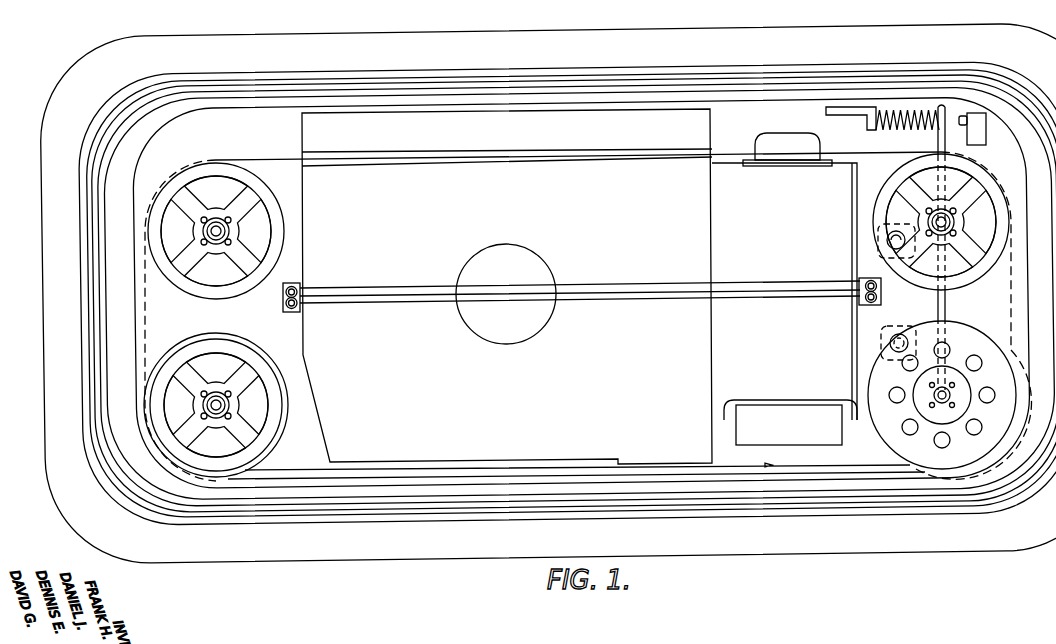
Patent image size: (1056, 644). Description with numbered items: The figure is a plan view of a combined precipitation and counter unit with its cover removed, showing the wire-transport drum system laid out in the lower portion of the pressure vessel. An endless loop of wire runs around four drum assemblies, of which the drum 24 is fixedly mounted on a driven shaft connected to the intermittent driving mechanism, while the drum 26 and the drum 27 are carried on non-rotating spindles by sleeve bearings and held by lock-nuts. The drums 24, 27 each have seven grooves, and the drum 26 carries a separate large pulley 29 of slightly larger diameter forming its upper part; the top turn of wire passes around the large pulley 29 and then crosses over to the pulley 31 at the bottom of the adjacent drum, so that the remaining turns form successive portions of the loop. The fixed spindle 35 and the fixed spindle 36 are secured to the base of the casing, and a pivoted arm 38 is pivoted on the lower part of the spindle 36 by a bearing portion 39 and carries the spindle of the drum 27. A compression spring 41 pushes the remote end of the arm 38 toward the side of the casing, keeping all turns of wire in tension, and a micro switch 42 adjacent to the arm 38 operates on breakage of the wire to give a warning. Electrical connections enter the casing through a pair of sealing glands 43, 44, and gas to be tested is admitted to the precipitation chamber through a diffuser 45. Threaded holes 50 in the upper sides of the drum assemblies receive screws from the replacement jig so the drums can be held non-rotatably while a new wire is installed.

The drum 24 is at (185, 165).
The drum 26 is at (884, 450).
The drum 27 is at (1006, 189).
The large pulley 29 is at (872, 395).
The pulley 31 is at (290, 424).
The spindle 35 is at (230, 406).
The spindle 36 is at (930, 222).
The pivoted arm 38 is at (946, 310).
The bearing portion 39 is at (962, 394).
The compression spring 41 is at (881, 131).
The micro switch 42 is at (986, 125).
The sealing gland 43 is at (890, 241).
The sealing gland 44 is at (899, 333).
The diffuser 45 is at (777, 412).
The threaded holes 50 is at (229, 222).